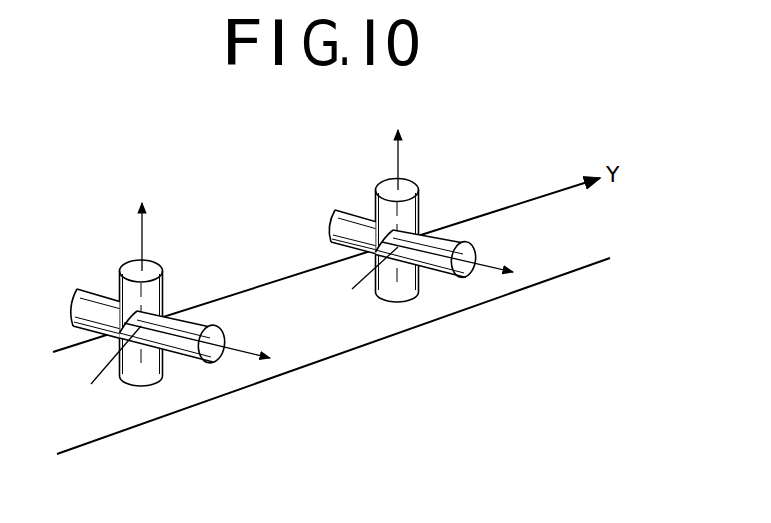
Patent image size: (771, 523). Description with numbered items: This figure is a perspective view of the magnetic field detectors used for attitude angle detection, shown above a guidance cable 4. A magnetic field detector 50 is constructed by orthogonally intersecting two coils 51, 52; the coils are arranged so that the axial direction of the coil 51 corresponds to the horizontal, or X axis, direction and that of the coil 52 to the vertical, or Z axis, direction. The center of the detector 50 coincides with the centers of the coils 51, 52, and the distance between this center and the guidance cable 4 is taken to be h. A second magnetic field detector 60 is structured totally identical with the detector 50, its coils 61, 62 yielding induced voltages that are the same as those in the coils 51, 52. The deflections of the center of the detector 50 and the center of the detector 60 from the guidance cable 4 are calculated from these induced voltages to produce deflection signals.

The guidance cable 4 is at (408, 333).
The magnetic field detector 50 is at (430, 201).
The coil 51 is at (460, 258).
The coil 52 is at (420, 198).
The magnetic field detector 60 is at (175, 288).
The coil 61 is at (215, 343).
The coil 62 is at (165, 288).